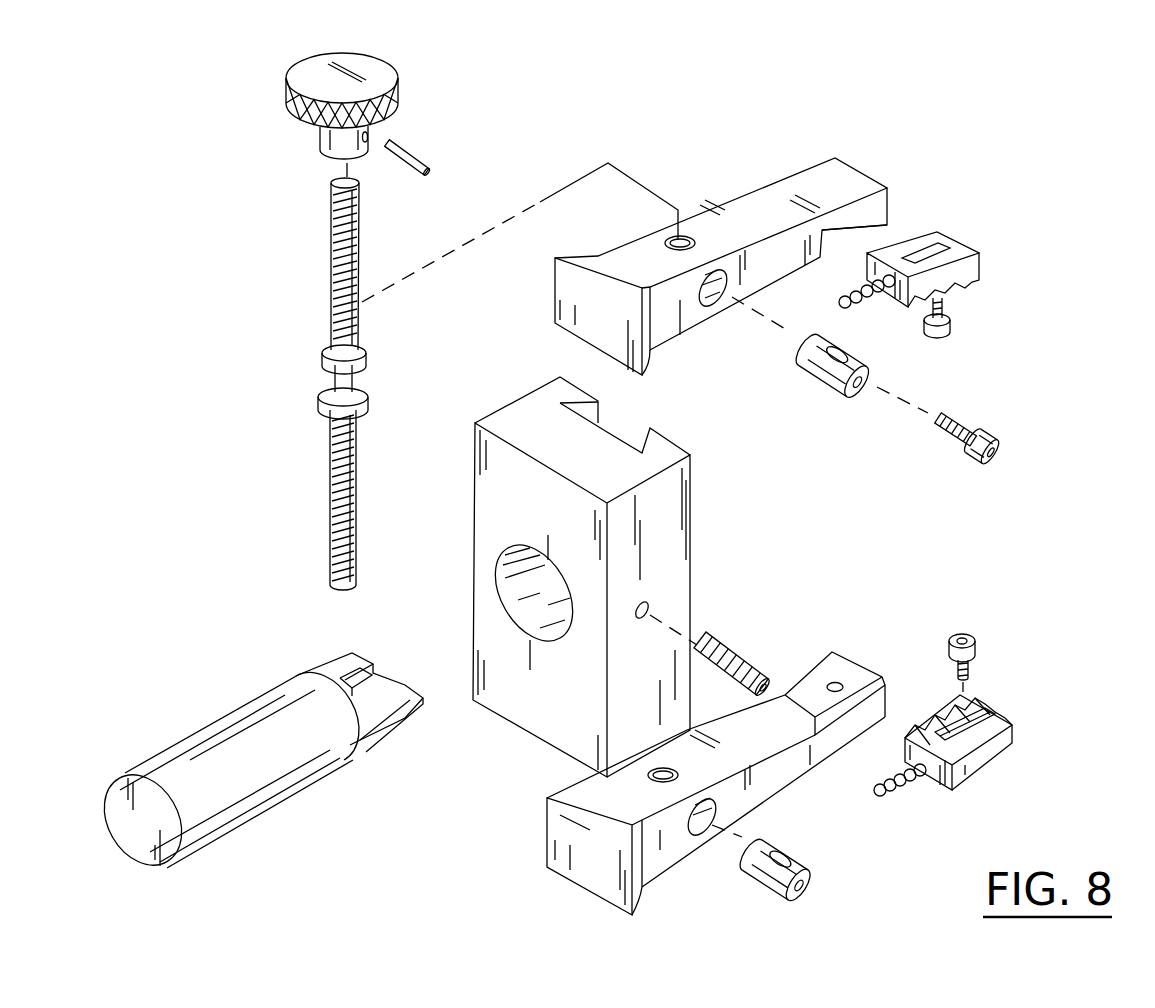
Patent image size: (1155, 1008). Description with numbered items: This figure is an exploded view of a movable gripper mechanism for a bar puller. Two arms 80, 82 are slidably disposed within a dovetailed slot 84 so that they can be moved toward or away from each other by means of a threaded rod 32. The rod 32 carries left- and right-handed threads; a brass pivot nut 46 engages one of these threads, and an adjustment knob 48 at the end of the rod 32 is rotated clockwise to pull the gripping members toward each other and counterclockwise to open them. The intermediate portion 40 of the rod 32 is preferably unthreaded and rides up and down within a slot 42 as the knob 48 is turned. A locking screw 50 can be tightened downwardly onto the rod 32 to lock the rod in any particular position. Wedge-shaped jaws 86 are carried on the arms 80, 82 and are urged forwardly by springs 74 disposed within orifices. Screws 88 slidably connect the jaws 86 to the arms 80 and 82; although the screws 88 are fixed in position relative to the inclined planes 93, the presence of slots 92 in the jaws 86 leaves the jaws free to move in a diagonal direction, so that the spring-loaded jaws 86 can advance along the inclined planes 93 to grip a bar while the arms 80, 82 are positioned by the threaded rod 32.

The threaded rod 32 is at (358, 262).
The intermediate portion of rod 40 is at (363, 389).
The slot 42 is at (374, 690).
The brass pivot nut 46 is at (775, 885).
The adjustment knob 48 is at (398, 88).
The locking screw 50 is at (998, 448).
The springs 74 is at (842, 300).
The arm 80 is at (855, 182).
The arm 82 is at (778, 786).
The dovetailed slot 84 is at (608, 434).
The wedge-shaped jaws 86 is at (978, 274).
The screws 88 is at (947, 312).
The slots 92 is at (935, 247).
The inclined planes 93 is at (870, 226).